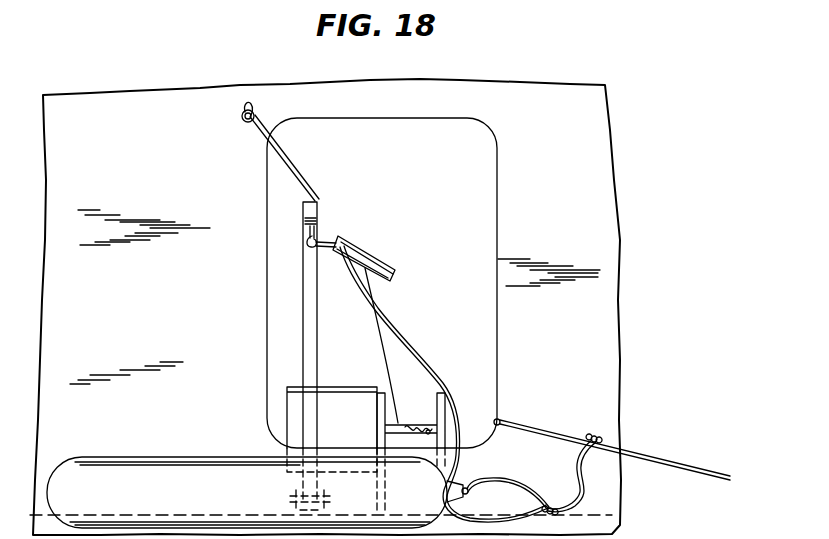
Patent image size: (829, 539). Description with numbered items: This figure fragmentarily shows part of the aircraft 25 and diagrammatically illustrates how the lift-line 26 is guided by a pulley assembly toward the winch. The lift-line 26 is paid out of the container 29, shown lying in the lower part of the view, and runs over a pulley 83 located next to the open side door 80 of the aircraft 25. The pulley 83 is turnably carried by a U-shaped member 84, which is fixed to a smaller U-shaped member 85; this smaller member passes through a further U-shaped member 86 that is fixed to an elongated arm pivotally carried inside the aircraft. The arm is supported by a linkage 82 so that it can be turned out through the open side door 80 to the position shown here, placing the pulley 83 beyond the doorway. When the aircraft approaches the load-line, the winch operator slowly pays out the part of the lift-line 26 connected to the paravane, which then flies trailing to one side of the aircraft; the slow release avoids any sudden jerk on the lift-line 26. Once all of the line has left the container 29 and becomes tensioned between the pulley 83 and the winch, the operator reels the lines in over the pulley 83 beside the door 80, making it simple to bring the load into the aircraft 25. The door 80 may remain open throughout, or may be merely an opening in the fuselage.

The aircraft 25 is at (537, 172).
The lift-line 26 is at (691, 467).
The container 29 is at (185, 462).
The open side door 80 is at (418, 180).
The linkage 82 is at (285, 163).
The pulley 83 is at (394, 268).
The U-shaped member 84 is at (354, 247).
The smaller U-shaped member 85 is at (321, 250).
The further U-shaped member 86 is at (320, 227).